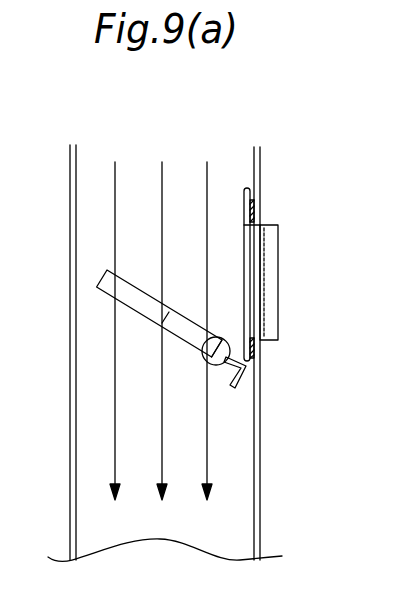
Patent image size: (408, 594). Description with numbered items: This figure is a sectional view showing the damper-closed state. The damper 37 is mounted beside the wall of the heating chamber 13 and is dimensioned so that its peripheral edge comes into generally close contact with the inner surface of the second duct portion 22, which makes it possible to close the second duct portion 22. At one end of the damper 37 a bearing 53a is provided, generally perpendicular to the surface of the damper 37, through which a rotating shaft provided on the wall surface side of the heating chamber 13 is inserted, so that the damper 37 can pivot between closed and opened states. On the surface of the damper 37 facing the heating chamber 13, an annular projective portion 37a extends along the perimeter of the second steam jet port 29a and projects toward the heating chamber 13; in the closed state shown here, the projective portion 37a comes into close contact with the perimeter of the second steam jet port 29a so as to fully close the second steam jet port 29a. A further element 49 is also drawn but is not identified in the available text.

The heating chamber 13 is at (344, 313).
The second duct portion 22 is at (70, 396).
The second steam jet port 29a is at (265, 231).
The damper 37 is at (235, 188).
The projective portion 37a is at (258, 208).
The lever 49 is at (101, 292).
The bearing 53a is at (236, 383).